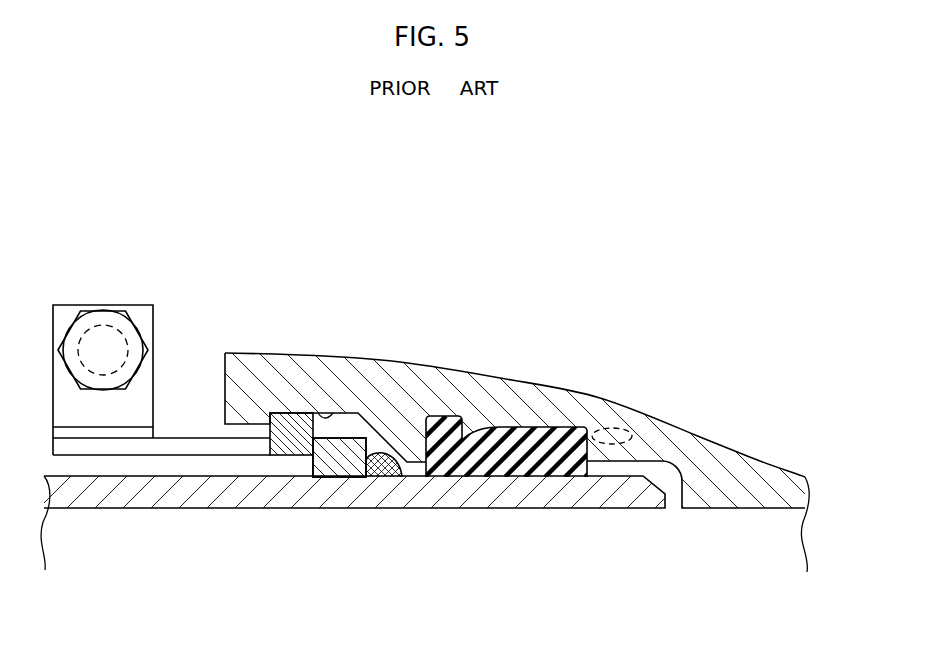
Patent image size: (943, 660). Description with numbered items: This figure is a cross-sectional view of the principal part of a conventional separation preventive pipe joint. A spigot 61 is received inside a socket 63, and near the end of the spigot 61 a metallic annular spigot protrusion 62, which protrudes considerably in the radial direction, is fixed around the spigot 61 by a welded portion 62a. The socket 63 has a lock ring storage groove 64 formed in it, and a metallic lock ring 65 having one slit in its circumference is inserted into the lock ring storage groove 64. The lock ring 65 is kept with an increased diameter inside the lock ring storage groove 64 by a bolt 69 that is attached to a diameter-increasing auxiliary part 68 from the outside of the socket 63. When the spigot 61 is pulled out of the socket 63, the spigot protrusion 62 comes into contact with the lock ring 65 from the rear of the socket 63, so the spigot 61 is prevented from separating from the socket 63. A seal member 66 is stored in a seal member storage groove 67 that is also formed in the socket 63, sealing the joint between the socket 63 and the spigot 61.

The spigot 61 is at (629, 486).
The spigot protrusion 62 is at (343, 438).
The welded portion 62a is at (387, 454).
The socket 63 is at (447, 371).
The lock ring storage groove 64 is at (313, 413).
The lock ring 65 is at (288, 412).
The seal member 66 is at (539, 427).
The seal member storage groove 67 is at (624, 428).
The diameter-increasing auxiliary part 68 is at (203, 445).
The bolt 69 is at (102, 322).